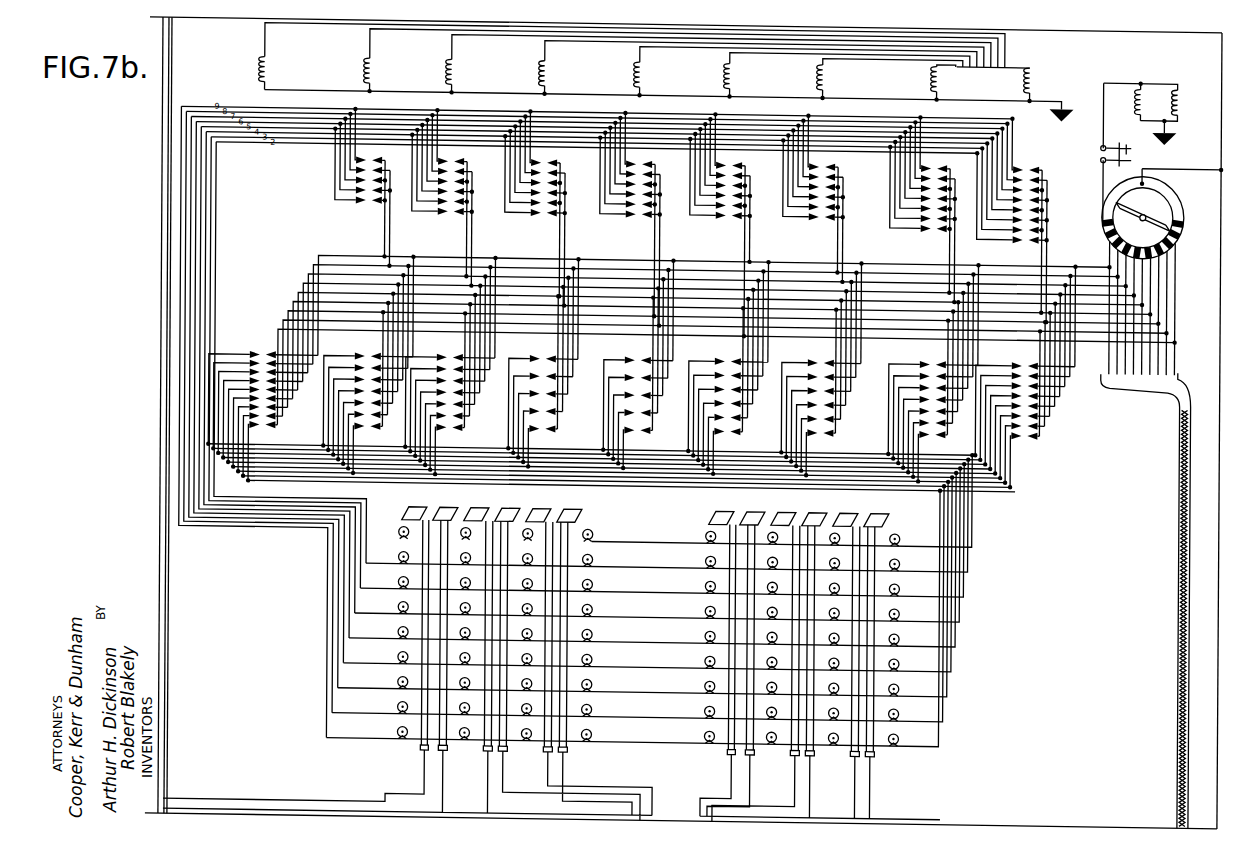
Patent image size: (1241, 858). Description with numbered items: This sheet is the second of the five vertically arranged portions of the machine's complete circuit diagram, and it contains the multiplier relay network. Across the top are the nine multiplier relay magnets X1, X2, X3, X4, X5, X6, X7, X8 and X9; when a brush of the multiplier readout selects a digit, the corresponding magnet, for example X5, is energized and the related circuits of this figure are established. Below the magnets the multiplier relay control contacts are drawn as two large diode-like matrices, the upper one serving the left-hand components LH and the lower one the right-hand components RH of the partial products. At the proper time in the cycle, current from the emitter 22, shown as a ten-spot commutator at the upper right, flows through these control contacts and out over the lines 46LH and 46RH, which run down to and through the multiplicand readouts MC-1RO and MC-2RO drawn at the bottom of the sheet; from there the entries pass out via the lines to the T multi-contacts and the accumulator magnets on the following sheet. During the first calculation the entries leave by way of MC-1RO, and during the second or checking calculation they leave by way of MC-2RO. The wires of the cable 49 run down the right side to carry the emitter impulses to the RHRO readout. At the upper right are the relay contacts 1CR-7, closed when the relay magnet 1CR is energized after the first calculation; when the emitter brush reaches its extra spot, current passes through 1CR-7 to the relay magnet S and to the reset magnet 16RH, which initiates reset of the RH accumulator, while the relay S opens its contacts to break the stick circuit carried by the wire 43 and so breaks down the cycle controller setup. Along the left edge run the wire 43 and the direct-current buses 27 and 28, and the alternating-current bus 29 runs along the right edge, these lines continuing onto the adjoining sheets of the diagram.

The emitter 22 is at (1170, 190).
The D. C. bus 27 is at (167, 684).
The D. C. bus 28 is at (172, 646).
The A. C. bus 29 is at (1222, 219).
The wire 43 is at (159, 609).
The cable 49 is at (1182, 584).
The left-hand impulse lines 46LH is at (280, 516).
The right-hand impulse lines 46RH is at (950, 526).
The RH reset magnet 16RH is at (1180, 69).
The relay magnet S is at (1139, 84).
The relay contacts 1CR-7 is at (1104, 136).
The relay magnet 1CR is at (1134, 140).
The multiplicand readout MC-1RO is at (408, 651).
The second multiplicand readout MC-2RO is at (821, 657).
The left-hand components LH is at (691, 224).
The right-hand components RH is at (642, 373).
The multiplier relay magnet X1 is at (615, 61).
The multiplier relay magnet X2 is at (664, 65).
The multiplier relay magnet X3 is at (701, 68).
The multiplier relay magnet X4 is at (744, 71).
The multiplier relay magnet X5 is at (788, 74).
The multiplier relay magnet X6 is at (830, 77).
The multiplier relay magnet X7 is at (873, 80).
The multiplier relay magnet X8 is at (926, 83).
The multiplier relay magnet X9 is at (1011, 85).